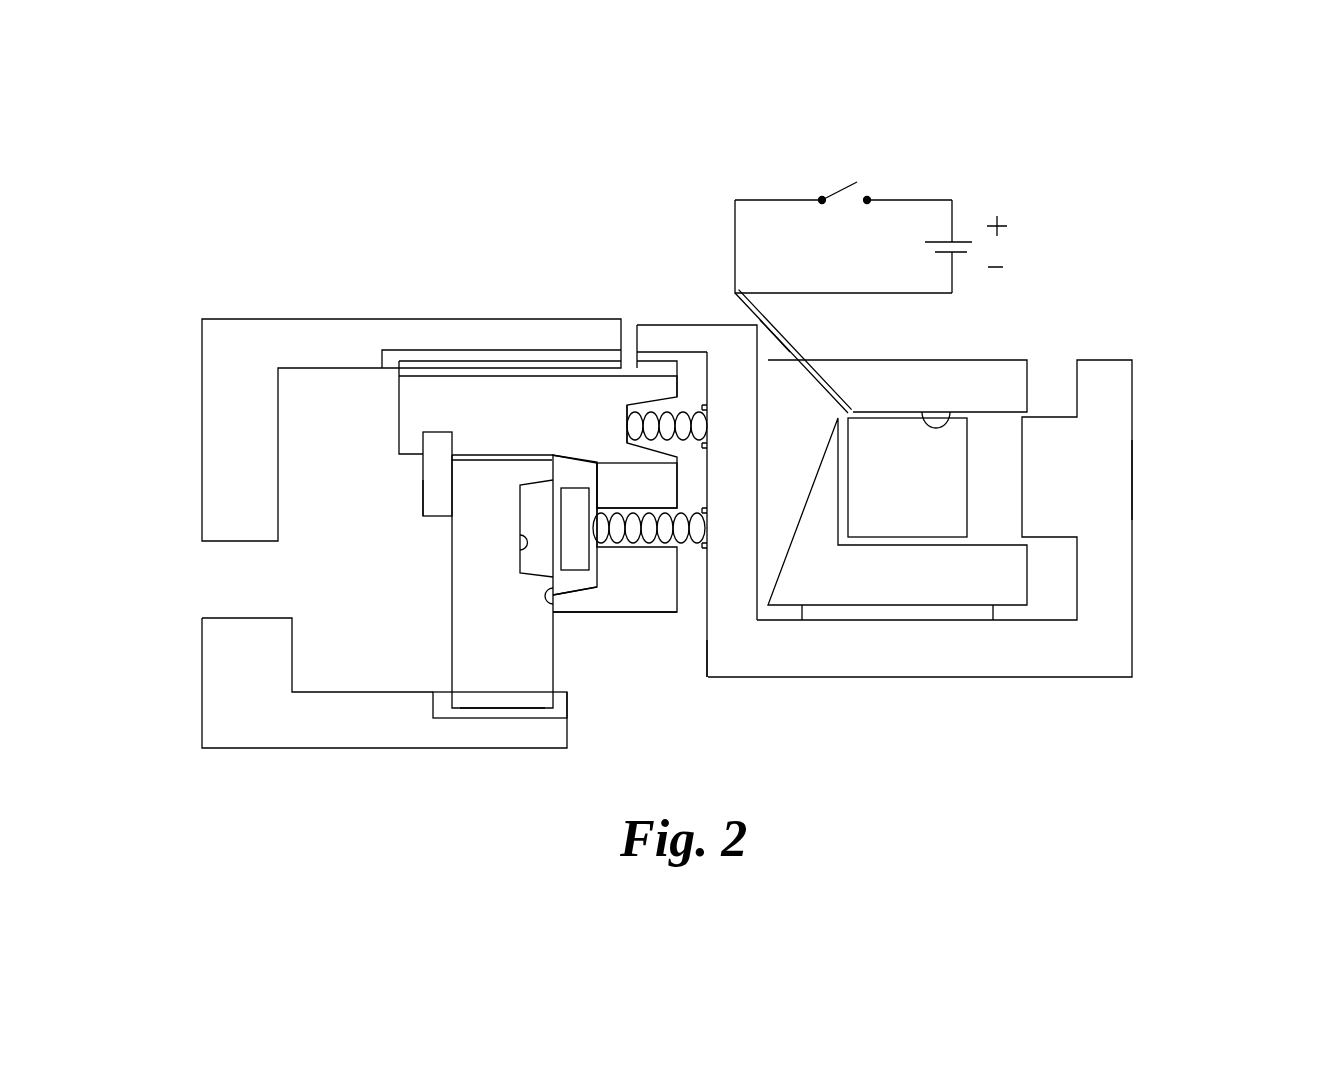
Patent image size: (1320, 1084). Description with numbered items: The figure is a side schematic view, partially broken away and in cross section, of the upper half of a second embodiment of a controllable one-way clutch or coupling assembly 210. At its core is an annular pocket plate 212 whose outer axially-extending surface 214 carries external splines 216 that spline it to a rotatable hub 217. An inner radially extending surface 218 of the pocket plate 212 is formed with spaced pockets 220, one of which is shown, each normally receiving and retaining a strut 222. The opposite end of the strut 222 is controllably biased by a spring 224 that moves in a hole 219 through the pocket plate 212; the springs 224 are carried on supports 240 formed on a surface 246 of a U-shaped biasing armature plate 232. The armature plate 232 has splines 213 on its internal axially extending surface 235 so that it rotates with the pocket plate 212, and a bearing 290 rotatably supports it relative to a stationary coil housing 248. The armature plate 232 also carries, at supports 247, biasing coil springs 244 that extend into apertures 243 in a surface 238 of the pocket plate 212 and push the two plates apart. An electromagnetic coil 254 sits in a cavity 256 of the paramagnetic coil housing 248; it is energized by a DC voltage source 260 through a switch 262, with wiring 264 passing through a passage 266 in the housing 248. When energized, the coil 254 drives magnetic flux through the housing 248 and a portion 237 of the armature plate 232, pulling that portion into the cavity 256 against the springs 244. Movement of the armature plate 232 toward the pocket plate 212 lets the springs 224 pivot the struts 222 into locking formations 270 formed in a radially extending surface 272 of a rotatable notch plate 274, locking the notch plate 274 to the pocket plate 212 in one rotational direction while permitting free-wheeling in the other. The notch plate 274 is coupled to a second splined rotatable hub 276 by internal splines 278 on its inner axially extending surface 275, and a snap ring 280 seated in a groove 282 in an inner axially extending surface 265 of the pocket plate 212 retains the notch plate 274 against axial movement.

The controllable one-way clutch or coupling assembly 210 is at (1175, 474).
The pocket plate 212 is at (573, 587).
The splines 213 is at (683, 352).
The outer axially-extending surface 214 is at (430, 368).
The external splines 216 is at (470, 360).
The rotatable hub 217 is at (240, 319).
The inner radially extending surface 218 is at (548, 604).
The hole 219 is at (635, 520).
The pocket 220 is at (613, 632).
The strut 222 is at (573, 518).
The spring 224 is at (663, 548).
The biasing armature plate 232 is at (731, 345).
The internal axially extending surface 235 is at (650, 353).
The portion of the plate 237 is at (1045, 465).
The surface of the plate 238 is at (677, 585).
The spring support 240 is at (697, 528).
The aperture 243 is at (627, 430).
The biasing coil spring 244 is at (643, 443).
The inner surface of the plate 246 is at (703, 448).
The support 247 is at (775, 357).
The coil housing 248 is at (990, 348).
The electromagnetic coil 254 is at (967, 478).
The cavity 256 is at (953, 418).
The DC voltage source 260 is at (965, 240).
The switch 262 is at (857, 193).
The wiring 264 is at (918, 330).
The inner axially extending surface 265 is at (471, 456).
The passage 266 is at (818, 392).
The locking formation 270 is at (528, 508).
The radially extending surface 272 is at (528, 552).
The notch plate 274 is at (440, 674).
The inner axially extending surface 275 is at (468, 708).
The rotatable hub 276 is at (240, 750).
The internal splines 278 is at (517, 710).
The snap ring 280 is at (423, 495).
The groove 282 is at (440, 432).
The bearing 290 is at (903, 615).